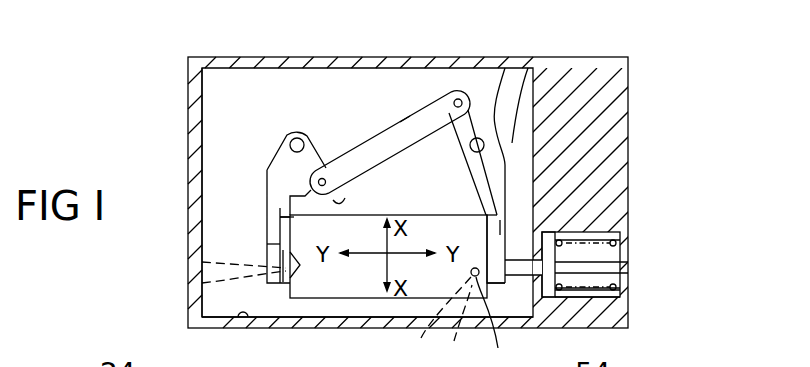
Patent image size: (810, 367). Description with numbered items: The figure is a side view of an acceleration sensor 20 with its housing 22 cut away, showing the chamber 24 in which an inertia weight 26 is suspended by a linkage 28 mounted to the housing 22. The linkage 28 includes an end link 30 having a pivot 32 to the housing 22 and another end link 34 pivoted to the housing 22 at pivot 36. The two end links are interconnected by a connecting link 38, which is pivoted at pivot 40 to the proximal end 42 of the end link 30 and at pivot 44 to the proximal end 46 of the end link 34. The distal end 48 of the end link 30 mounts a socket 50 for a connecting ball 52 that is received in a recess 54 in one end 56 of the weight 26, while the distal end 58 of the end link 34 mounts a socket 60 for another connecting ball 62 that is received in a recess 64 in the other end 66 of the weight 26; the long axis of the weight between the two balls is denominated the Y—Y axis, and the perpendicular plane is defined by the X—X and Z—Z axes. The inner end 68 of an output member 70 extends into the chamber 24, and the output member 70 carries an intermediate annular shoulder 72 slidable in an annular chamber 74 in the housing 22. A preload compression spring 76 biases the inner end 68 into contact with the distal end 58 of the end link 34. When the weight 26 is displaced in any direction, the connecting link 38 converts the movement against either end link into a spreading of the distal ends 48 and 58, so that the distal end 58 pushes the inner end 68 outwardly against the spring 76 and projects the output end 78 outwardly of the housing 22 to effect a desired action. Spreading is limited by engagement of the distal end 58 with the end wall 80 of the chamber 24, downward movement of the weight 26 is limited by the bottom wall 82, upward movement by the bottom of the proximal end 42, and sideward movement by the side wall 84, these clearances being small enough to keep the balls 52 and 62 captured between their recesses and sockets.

The acceleration sensor 20 is at (646, 153).
The housing 22 is at (608, 72).
The chamber 24 is at (244, 96).
The inertia weight 26 is at (338, 288).
The linkage 28 is at (343, 116).
The end link 30 is at (283, 166).
The pivot 32 is at (295, 128).
The end link 34 is at (528, 68).
The pivot 36 is at (505, 68).
The connecting link 38 is at (404, 128).
The pivot 40 is at (348, 190).
The proximal end 42 is at (327, 198).
The pivot 44 is at (456, 98).
The proximal end 46 is at (477, 138).
The distal end 48 is at (268, 244).
The socket 50 is at (286, 283).
The connecting ball 52 is at (202, 283).
The recess 54 is at (202, 262).
The end 56 is at (294, 226).
The distal end 58 is at (500, 228).
The socket 60 is at (494, 317).
The connecting ball 62 is at (431, 322).
The recess 64 is at (452, 326).
The end 66 is at (475, 216).
The inner end 68 is at (517, 267).
The output member 70 is at (612, 282).
The annular shoulder 72 is at (545, 232).
The annular chamber 74 is at (613, 249).
The preload compression spring 76 is at (609, 268).
The output end 78 is at (626, 265).
The end wall 80 is at (533, 148).
The bottom wall 82 is at (241, 318).
The side wall 84 is at (367, 342).